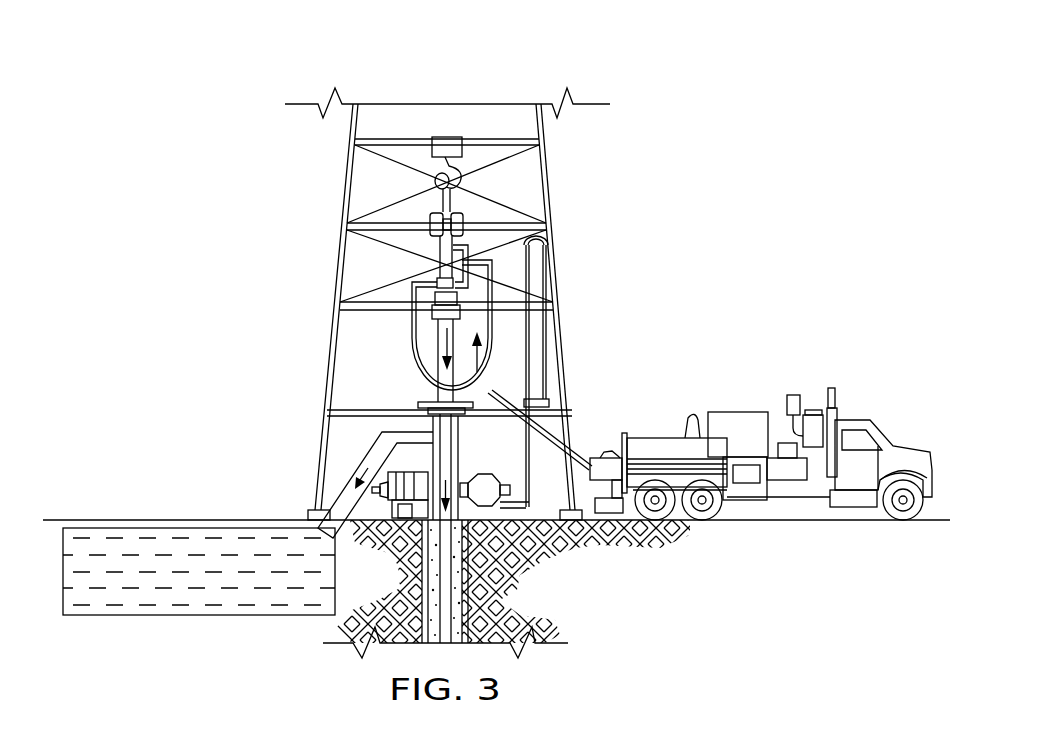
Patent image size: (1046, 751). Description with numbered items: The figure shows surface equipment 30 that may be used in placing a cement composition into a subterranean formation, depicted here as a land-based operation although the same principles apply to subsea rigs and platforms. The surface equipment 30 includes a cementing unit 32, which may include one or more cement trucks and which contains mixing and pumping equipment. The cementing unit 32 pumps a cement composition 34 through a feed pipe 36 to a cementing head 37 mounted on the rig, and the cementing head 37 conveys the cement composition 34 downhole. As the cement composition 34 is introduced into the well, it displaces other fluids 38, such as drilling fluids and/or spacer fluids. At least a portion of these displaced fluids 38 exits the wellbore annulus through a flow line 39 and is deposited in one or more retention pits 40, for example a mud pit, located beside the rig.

The surface equipment 30 is at (687, 75).
The cementing unit 32 is at (858, 414).
The cement composition 34 is at (437, 347).
The feed pipe 36 is at (550, 437).
The cementing head 37 is at (472, 213).
The displaced fluids 38 is at (465, 585).
The flow line 39 is at (350, 476).
The retention pit 40 is at (203, 614).